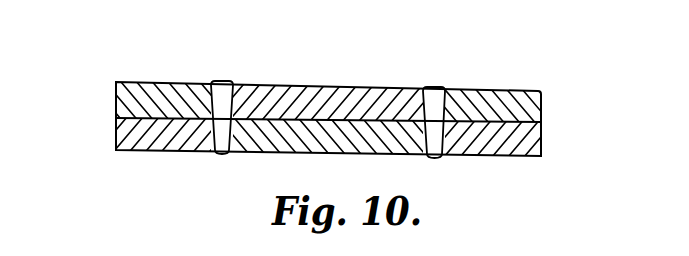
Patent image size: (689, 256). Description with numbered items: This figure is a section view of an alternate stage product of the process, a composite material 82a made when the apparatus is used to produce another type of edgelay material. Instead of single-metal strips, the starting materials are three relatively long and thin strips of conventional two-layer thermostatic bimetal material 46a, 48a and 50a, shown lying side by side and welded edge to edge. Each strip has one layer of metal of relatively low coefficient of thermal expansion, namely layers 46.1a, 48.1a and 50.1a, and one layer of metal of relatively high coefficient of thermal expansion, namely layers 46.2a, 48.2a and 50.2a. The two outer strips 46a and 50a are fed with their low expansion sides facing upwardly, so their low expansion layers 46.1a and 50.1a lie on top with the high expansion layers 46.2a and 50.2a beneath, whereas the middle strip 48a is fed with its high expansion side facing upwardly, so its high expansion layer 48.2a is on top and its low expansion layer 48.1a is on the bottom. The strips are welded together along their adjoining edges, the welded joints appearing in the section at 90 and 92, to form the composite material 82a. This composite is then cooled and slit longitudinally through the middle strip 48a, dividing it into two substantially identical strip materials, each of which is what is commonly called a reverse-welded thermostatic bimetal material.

The two-layer thermostatic bimetal strip 46a is at (139, 106).
The low expansion metal layer 46.1a is at (116, 104).
The high expansion metal layer 46.2a is at (116, 134).
The rivet 90 is at (235, 83).
The composite material 82a is at (307, 50).
The two-layer thermostatic bimetal strip 48a is at (329, 114).
The low expansion metal layer 48.1a is at (368, 152).
The high expansion metal layer 48.2a is at (397, 88).
The rivet 92 is at (438, 87).
The two-layer thermostatic bimetal strip 50a is at (515, 109).
The low expansion metal layer 50.1a is at (542, 105).
The high expansion metal layer 50.2a is at (542, 140).